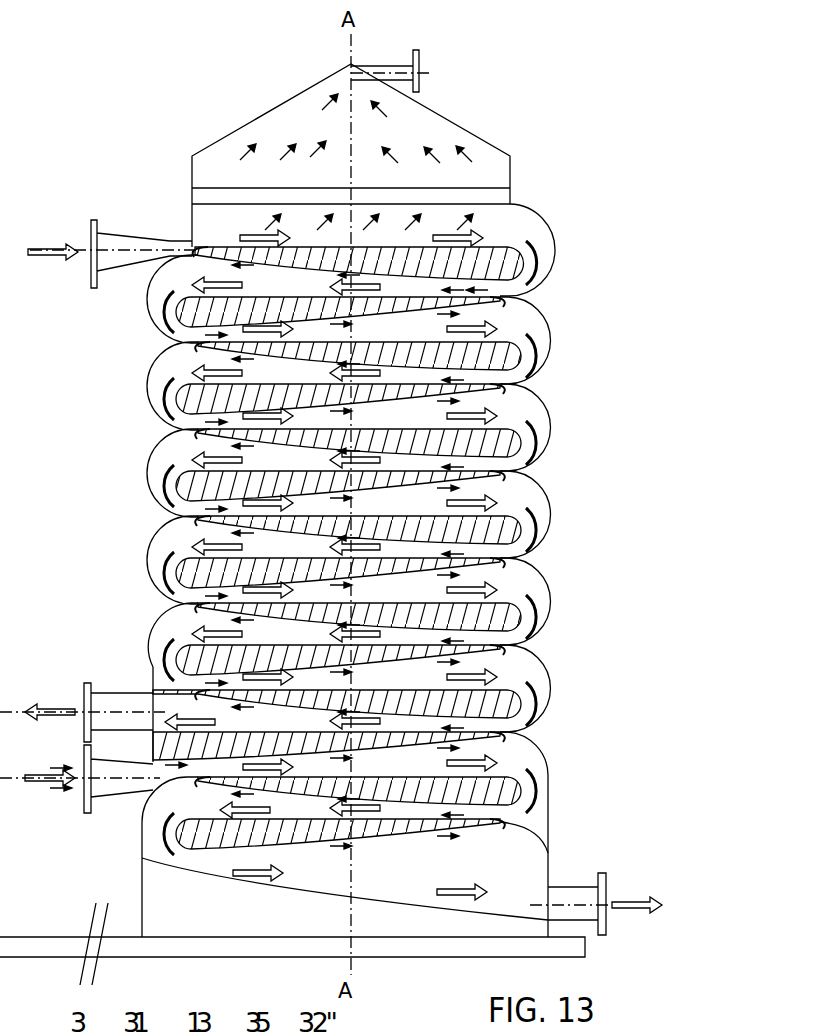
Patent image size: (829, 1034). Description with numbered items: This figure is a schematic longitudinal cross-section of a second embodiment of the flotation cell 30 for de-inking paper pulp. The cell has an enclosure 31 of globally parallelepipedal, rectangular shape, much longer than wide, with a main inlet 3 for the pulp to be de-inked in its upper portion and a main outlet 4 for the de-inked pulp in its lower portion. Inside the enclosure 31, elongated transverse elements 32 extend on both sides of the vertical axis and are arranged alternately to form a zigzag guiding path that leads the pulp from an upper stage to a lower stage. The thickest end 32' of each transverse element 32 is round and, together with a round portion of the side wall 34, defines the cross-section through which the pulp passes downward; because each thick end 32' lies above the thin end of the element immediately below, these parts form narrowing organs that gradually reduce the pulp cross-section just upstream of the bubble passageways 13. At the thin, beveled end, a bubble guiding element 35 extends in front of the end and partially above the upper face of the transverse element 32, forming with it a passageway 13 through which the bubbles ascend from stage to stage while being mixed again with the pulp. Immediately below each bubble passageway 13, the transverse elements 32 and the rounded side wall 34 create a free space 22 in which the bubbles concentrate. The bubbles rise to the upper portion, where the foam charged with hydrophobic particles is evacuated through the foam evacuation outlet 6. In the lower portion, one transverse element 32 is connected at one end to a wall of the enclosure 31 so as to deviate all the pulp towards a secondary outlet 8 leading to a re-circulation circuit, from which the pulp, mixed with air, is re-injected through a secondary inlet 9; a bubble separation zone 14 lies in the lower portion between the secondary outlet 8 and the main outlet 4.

The main inlet 3 is at (91, 222).
The main outlet 4 is at (578, 892).
The foam evacuation outlet 6 is at (413, 54).
The secondary outlet 8 is at (83, 683).
The secondary inlet 9 is at (84, 757).
The bubble passageway 13 is at (233, 247).
The bubble separation zone 14 is at (551, 826).
The free space for concentration of the bubbles 22 is at (178, 240).
The flotation cell 30 is at (5, 462).
The enclosure 31 is at (550, 213).
The transverse element 32 is at (346, 589).
The thick end of the transverse element 32' is at (396, 204).
The side wall 34 is at (147, 300).
The bubble guiding element 35 is at (213, 246).